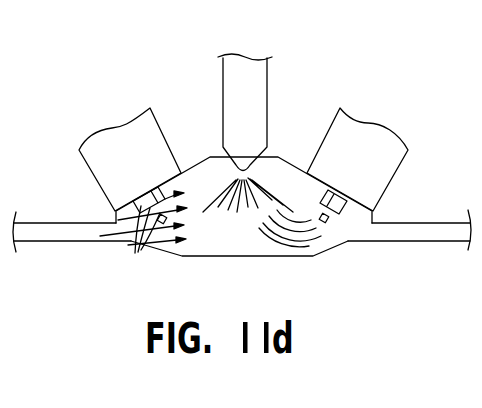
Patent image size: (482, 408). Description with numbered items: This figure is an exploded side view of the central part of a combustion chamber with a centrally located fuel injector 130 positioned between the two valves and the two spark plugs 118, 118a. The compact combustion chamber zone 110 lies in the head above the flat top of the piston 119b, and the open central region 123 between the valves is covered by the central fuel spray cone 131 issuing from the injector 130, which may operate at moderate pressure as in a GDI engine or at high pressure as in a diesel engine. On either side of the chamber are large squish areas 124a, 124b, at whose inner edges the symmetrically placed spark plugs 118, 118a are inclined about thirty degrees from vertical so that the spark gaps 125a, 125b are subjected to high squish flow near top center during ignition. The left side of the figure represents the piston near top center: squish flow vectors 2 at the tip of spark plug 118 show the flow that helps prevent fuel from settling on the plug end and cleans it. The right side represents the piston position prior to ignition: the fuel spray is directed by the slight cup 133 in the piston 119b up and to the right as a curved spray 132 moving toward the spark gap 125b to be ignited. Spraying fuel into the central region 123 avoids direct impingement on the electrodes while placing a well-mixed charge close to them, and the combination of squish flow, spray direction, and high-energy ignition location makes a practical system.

The squish flow vectors 2 is at (138, 250).
The combustion chamber zone 110 is at (318, 200).
The spark plug 118 is at (120, 127).
The spark plug 118a is at (368, 124).
The piston 119b is at (239, 272).
The central region 123 is at (248, 208).
The squish area 124a is at (68, 231).
The squish area 124b is at (398, 230).
The spark gap 125a is at (144, 217).
The spark gap 125b is at (333, 216).
The fuel injector 130 is at (245, 92).
The central fuel spray cone 131 is at (213, 187).
The curved spray 132 is at (310, 242).
The cup 133 is at (266, 234).